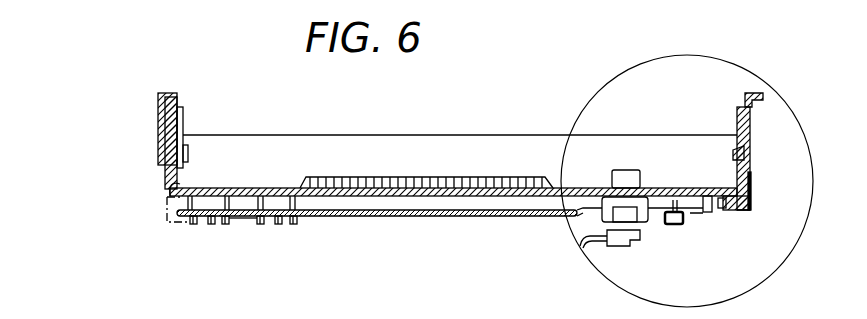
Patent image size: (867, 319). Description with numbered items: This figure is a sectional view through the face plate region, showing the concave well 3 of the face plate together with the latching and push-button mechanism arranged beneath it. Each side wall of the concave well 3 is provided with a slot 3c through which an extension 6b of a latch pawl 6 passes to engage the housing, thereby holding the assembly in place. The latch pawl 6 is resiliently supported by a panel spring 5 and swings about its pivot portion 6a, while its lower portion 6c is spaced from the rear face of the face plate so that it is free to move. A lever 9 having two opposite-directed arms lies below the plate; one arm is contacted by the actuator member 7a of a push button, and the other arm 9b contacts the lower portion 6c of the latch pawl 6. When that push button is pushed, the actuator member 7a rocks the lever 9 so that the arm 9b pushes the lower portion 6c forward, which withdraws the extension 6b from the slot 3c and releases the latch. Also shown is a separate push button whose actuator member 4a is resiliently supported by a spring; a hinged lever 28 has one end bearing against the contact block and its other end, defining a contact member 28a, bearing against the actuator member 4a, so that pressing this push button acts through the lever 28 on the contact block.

The concave well 3 is at (262, 186).
The slot 3c is at (742, 140).
The actuator member 4a is at (637, 247).
The panel spring 5 is at (753, 207).
The latch pawl 6 is at (750, 162).
The pivot portion 6a is at (753, 197).
The extension 6b is at (743, 152).
The lower portion 6c is at (705, 213).
The actuator member 7a is at (167, 215).
The lever 9 is at (378, 216).
The arm 9b is at (676, 226).
The lever 28 is at (597, 224).
The contact member 28a is at (614, 248).